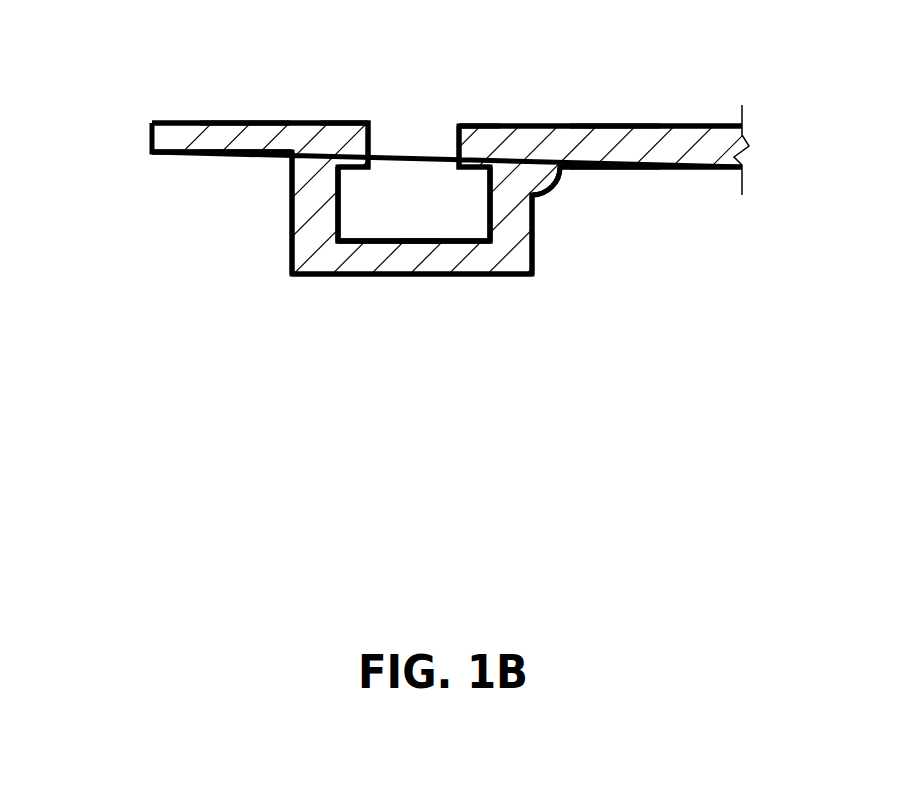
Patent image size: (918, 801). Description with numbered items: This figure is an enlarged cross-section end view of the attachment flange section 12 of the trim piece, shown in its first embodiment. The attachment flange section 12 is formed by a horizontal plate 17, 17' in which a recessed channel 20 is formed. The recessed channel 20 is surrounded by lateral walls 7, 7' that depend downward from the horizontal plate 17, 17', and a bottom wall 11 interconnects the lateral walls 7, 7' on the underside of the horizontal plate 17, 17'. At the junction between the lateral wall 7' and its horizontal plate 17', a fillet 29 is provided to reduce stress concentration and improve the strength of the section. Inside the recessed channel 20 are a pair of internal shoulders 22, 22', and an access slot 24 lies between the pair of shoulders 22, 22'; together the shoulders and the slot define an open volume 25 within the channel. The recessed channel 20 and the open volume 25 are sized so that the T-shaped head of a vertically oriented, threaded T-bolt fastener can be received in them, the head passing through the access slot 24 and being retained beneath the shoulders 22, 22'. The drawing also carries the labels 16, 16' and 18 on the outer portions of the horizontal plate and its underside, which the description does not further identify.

The attachment flange section 12 is at (745, 388).
The first flange 16 is at (227, 98).
The horizontal plate 17 is at (242, 83).
The internal shoulder 22 is at (331, 92).
The access slot 24 is at (412, 122).
The internal shoulder 22' is at (483, 92).
The horizontal plate 17' is at (615, 91).
The second flange 16' is at (618, 107).
The flange underside 18 is at (177, 158).
The lateral wall 7 is at (251, 237).
The open volume 25 is at (358, 233).
The bottom wall 11 is at (408, 258).
The lateral wall 7' is at (566, 254).
The fillet 29 is at (550, 178).
The recessed channel 20 is at (434, 215).